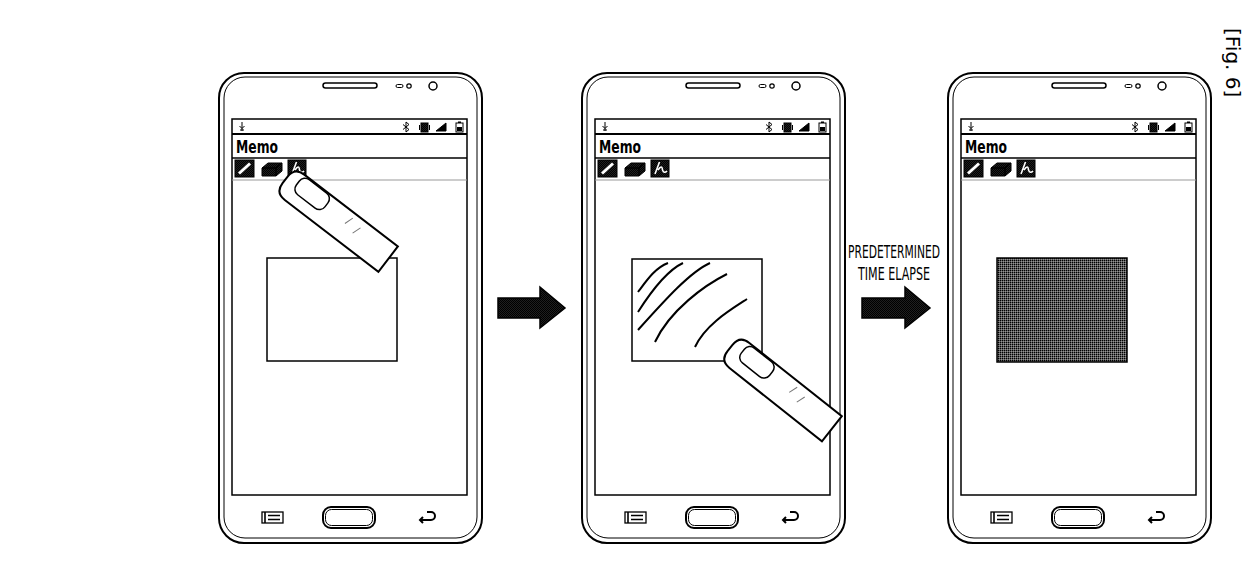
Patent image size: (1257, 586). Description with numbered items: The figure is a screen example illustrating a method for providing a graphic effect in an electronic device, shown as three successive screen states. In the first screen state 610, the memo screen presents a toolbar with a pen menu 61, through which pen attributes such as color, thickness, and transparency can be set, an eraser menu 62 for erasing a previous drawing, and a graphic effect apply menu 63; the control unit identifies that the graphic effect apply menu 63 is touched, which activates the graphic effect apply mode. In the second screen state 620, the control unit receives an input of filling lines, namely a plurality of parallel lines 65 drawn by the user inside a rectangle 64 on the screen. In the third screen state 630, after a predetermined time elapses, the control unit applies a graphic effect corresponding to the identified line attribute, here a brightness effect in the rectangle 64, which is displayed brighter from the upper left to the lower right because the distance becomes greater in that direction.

The screen state 610 is at (352, 70).
The screen state 620 is at (715, 70).
The screen state 630 is at (1081, 70).
The pen menu 61 is at (235, 170).
The eraser menu 62 is at (262, 172).
The graphic effect apply menu 63 is at (288, 174).
The rectangle 64 is at (266, 310).
The parallel lines 65 is at (695, 346).